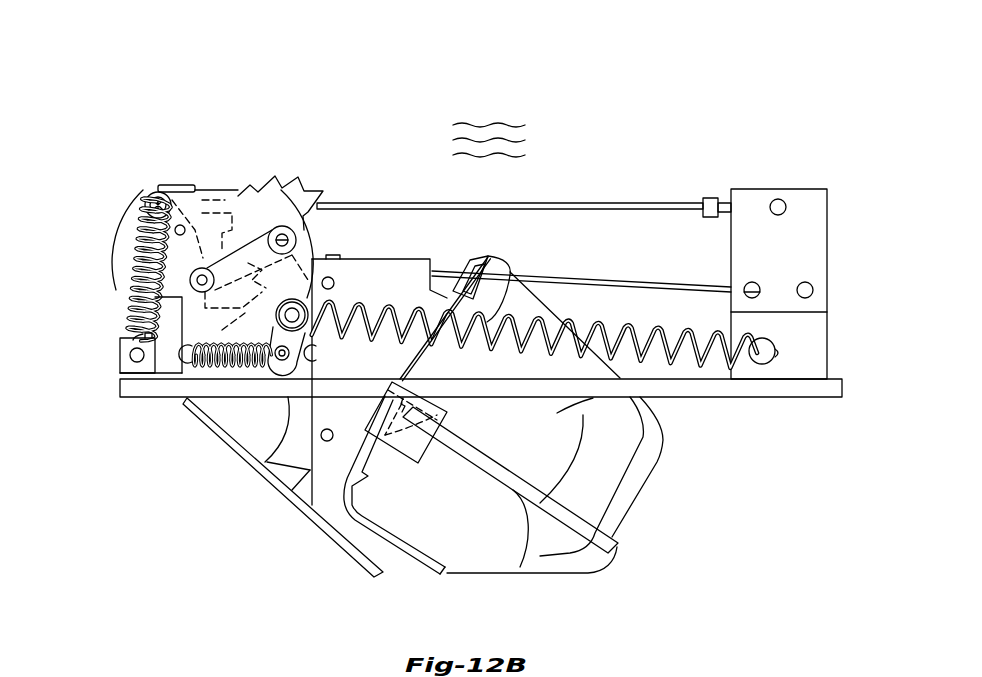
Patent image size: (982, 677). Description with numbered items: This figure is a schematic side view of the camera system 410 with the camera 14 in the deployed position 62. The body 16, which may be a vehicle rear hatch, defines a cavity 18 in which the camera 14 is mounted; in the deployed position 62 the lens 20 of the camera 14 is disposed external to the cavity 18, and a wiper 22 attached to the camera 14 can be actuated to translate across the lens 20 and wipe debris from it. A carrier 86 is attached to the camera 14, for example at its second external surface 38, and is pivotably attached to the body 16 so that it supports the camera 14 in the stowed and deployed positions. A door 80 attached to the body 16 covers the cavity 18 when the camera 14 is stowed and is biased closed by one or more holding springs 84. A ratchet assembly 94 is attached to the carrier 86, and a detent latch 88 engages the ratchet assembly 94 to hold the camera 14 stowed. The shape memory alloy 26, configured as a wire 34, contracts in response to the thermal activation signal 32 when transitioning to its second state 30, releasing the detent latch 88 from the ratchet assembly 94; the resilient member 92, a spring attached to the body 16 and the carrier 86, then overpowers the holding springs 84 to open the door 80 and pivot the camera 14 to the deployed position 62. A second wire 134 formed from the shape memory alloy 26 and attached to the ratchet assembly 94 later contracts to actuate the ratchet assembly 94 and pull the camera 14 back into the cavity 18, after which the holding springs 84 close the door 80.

The camera 14 is at (487, 572).
The body 16 is at (843, 394).
The cavity 18 is at (590, 248).
The lens 20 is at (637, 511).
The wiper 22 is at (623, 557).
The shape memory alloy 26 is at (524, 302).
The second state 30 is at (669, 162).
The thermal activation signal 32 is at (492, 124).
The wire 34 is at (608, 203).
The second external surface 38 is at (444, 514).
The deployed position 62 is at (720, 572).
The door 80 is at (347, 553).
The holding springs 84 is at (133, 303).
The carrier 86 is at (372, 259).
The detent latch 88 is at (188, 327).
The resilient member 92 is at (507, 270).
The ratchet assembly 94 is at (288, 188).
The second wire 134 is at (601, 279).
The camera system 410 is at (150, 140).